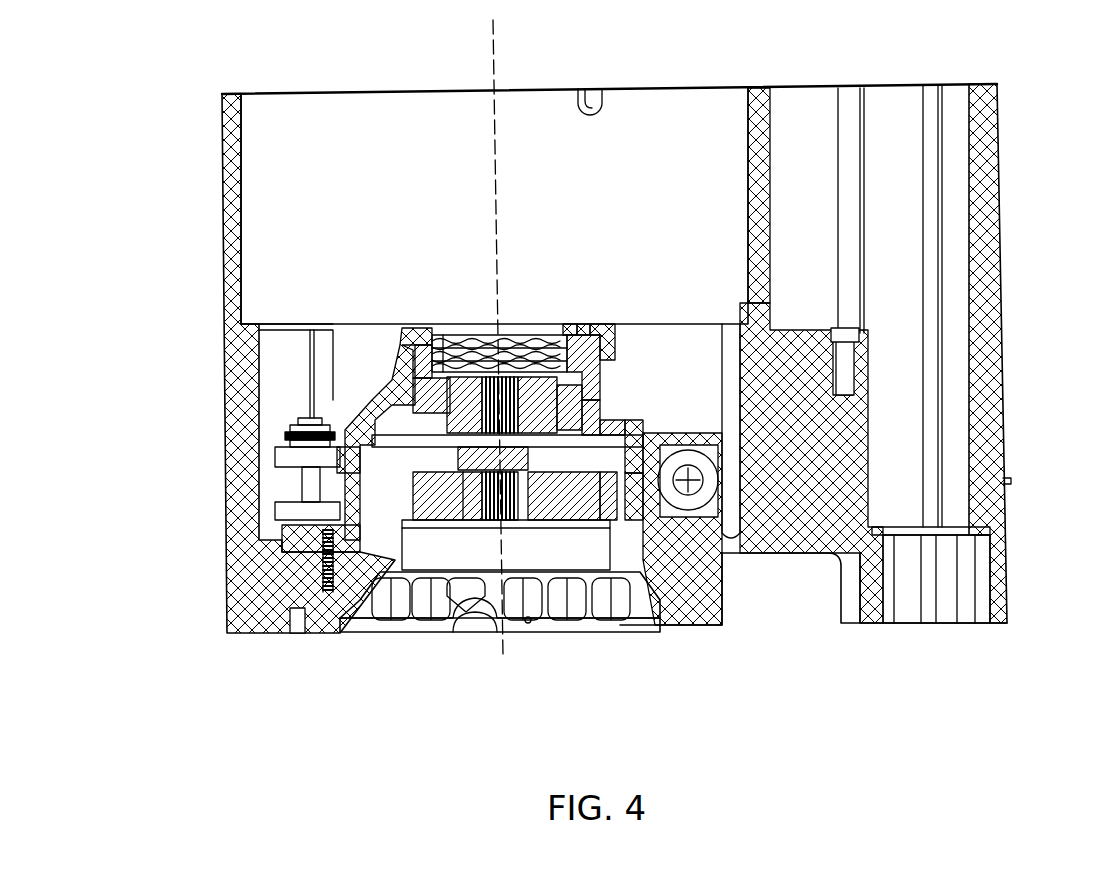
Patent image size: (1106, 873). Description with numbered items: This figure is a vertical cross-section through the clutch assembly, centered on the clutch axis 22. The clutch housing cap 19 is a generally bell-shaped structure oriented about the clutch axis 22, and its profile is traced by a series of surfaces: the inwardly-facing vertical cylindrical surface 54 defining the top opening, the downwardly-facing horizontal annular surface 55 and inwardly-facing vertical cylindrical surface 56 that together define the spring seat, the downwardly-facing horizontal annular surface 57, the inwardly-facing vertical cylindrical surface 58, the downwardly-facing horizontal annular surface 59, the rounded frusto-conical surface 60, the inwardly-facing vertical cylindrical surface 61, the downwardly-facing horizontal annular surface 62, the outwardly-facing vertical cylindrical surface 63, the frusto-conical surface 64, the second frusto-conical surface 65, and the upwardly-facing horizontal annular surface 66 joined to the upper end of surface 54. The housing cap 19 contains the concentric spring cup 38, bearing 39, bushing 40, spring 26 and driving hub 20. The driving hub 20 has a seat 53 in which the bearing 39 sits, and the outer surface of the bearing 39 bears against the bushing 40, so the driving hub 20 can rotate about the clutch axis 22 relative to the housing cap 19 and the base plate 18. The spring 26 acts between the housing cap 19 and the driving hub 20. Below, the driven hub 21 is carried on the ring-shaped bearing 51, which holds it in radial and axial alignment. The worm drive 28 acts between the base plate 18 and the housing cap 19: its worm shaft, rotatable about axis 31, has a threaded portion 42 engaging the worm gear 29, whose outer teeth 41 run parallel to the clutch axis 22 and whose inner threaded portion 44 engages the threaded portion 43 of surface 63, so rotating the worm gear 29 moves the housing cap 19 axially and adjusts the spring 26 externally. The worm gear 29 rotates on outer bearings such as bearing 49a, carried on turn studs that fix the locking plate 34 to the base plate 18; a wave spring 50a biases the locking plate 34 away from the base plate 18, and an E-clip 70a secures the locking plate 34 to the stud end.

The base plate 18 is at (350, 562).
The clutch housing cap 19 is at (403, 317).
The driving hub 20 is at (407, 392).
The driven hub 21 is at (472, 525).
The clutch axis 22 is at (500, 38).
The spring 26 is at (452, 330).
The worm drive 28 is at (743, 472).
The worm gear 29 is at (652, 522).
The axis 31 is at (706, 463).
The locking plate 34 is at (275, 442).
The spring cup 38 is at (440, 397).
The bearing 39 is at (280, 417).
The bushing 40 is at (403, 345).
The teeth 41 is at (718, 620).
The threaded portion 42 is at (723, 566).
The threaded portion 43 is at (350, 475).
The inner threaded portion 44 is at (458, 487).
The bearing 49a is at (277, 458).
The wave spring 50a is at (277, 442).
The bearing 51 is at (537, 525).
The seat 53 is at (410, 365).
The inwardly-facing vertical cylindrical surface 54 is at (550, 330).
The downwardly-facing horizontal annular surface 55 is at (533, 330).
The inwardly-facing vertical cylindrical surface 56 is at (562, 332).
The downwardly-facing horizontal annular surface 57 is at (590, 332).
The inwardly-facing vertical cylindrical surface 58 is at (598, 412).
The downwardly-facing horizontal annular surface 59 is at (605, 420).
The rounded frusto-conical surface 60 is at (640, 432).
The inwardly-facing vertical cylindrical surface 61 is at (644, 440).
The downwardly-facing horizontal annular surface 62 is at (557, 500).
The outwardly-facing vertical cylindrical surface 63 is at (857, 380).
The frusto-conical surface 64 is at (612, 372).
The second frusto-conical surface 65 is at (600, 335).
The upwardly-facing horizontal annular surface 66 is at (558, 332).
The E-clip 70a is at (277, 432).